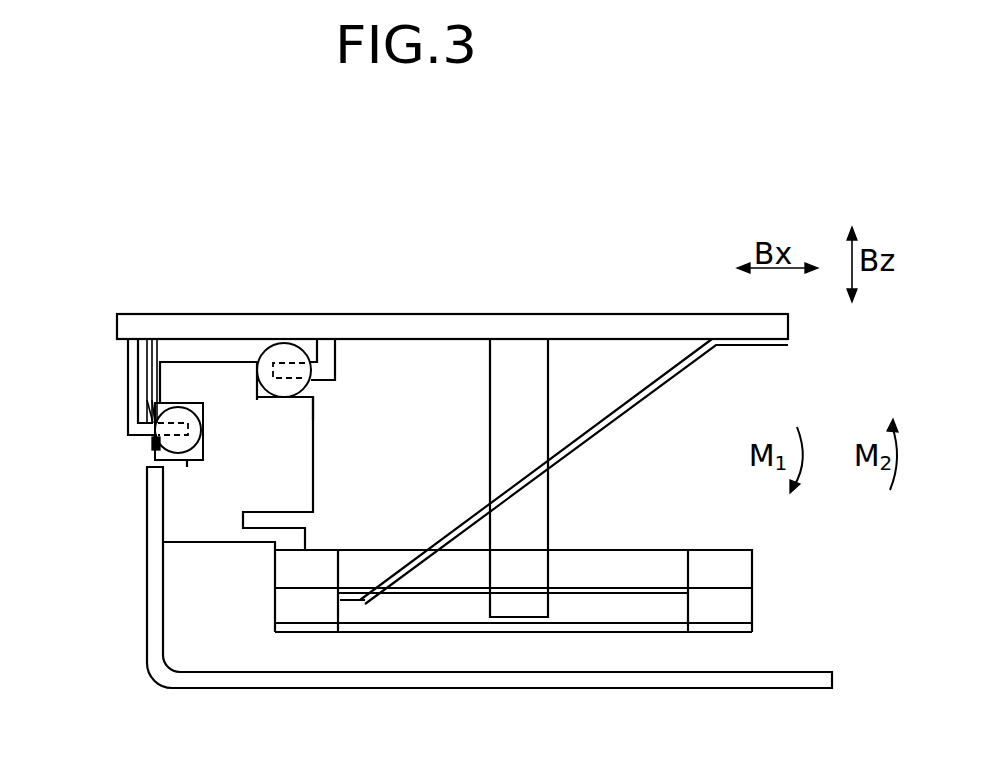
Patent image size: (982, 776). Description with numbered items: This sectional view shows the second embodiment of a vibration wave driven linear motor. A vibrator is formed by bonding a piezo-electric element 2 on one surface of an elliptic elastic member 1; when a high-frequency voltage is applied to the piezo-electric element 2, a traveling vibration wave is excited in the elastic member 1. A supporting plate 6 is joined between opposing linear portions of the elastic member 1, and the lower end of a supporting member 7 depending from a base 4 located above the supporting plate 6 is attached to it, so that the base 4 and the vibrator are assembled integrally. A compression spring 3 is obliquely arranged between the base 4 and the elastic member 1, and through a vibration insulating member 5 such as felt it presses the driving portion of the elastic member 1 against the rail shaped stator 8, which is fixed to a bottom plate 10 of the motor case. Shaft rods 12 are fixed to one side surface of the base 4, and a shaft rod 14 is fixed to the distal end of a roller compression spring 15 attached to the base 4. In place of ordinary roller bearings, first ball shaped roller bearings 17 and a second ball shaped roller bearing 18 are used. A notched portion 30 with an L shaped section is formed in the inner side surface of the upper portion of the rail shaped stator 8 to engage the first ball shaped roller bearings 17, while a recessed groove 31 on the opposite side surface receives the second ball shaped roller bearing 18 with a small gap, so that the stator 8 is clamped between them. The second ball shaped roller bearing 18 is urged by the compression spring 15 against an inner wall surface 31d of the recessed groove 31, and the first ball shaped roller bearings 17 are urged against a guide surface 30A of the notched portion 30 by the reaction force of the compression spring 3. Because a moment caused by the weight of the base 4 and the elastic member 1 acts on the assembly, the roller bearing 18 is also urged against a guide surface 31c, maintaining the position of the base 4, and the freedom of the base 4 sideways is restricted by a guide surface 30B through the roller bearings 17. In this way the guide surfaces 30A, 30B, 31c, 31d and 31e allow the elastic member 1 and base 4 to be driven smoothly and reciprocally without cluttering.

The elastic member 1 is at (752, 568).
The piezo-electric element 2 is at (752, 628).
The compression spring 3 is at (668, 365).
The base 4 is at (603, 335).
The vibration insulating member 5 is at (357, 602).
The supporting plate 6 is at (665, 592).
The supporting member 7 is at (505, 365).
The rail shaped stator 8 is at (212, 375).
The bottom plate 10 is at (703, 682).
The shaft rods 12 is at (347, 347).
The shaft rod 14 is at (127, 367).
The roller compression spring 15 is at (155, 357).
The first ball shaped roller bearings 17 is at (282, 345).
The second ball shaped roller bearing 18 is at (202, 437).
The notched portion 30 is at (335, 409).
The guide surface 30A is at (308, 393).
The guide surface 30B is at (262, 398).
The recessed groove 31 is at (122, 441).
The guide surface 31c is at (153, 417).
The inner wall surface 31d is at (157, 457).
The guide surface 31e is at (187, 467).